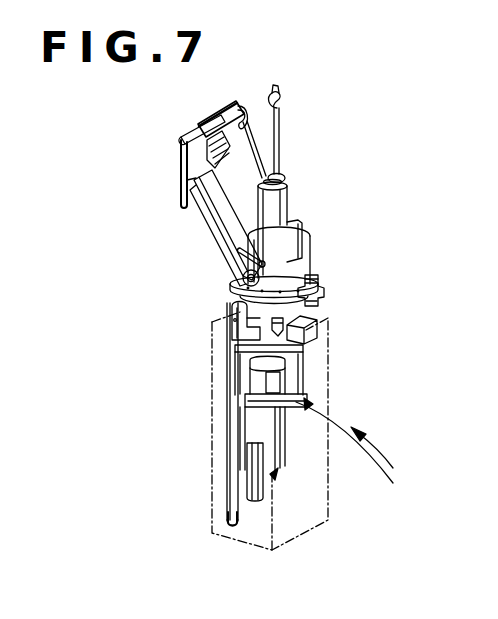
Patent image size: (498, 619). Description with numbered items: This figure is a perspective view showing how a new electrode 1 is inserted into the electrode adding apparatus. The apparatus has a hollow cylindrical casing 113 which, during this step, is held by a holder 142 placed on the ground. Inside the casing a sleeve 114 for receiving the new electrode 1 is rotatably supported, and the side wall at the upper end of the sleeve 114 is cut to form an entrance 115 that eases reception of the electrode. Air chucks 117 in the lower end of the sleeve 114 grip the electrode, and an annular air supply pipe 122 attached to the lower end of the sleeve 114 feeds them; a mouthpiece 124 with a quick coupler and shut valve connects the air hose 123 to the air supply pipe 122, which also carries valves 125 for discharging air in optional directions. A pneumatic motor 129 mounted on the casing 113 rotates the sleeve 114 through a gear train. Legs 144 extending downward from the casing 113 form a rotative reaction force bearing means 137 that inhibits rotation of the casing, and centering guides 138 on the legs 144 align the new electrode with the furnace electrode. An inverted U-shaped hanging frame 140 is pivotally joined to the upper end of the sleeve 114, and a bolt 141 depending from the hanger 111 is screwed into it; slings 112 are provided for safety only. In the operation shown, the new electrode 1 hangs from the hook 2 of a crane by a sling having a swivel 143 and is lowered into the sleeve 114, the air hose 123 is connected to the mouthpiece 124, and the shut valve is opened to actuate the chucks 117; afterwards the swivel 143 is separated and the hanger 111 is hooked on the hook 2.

The new electrode 1 is at (288, 207).
The hook 2 is at (280, 102).
The hanger 111 is at (177, 186).
The slings 112 is at (222, 270).
The hollow cylindrical casing 113 is at (237, 323).
The sleeve 114 is at (277, 268).
The entrance 115 is at (305, 237).
The air chucks 117 is at (260, 380).
The annular air supply pipe 122 is at (290, 415).
The air hose 123 is at (362, 432).
The mouthpiece 124 is at (308, 404).
The valves 125 is at (305, 388).
The pneumatic motor 129 is at (319, 289).
The rotative reaction force bearing means 137 is at (226, 462).
The centering guides 138 is at (257, 497).
The inverted U-shaped hanging frame 140 is at (223, 231).
The bolt 141 is at (217, 118).
The holder 142 is at (330, 344).
The swivel 143 is at (279, 177).
The legs 144 is at (226, 518).